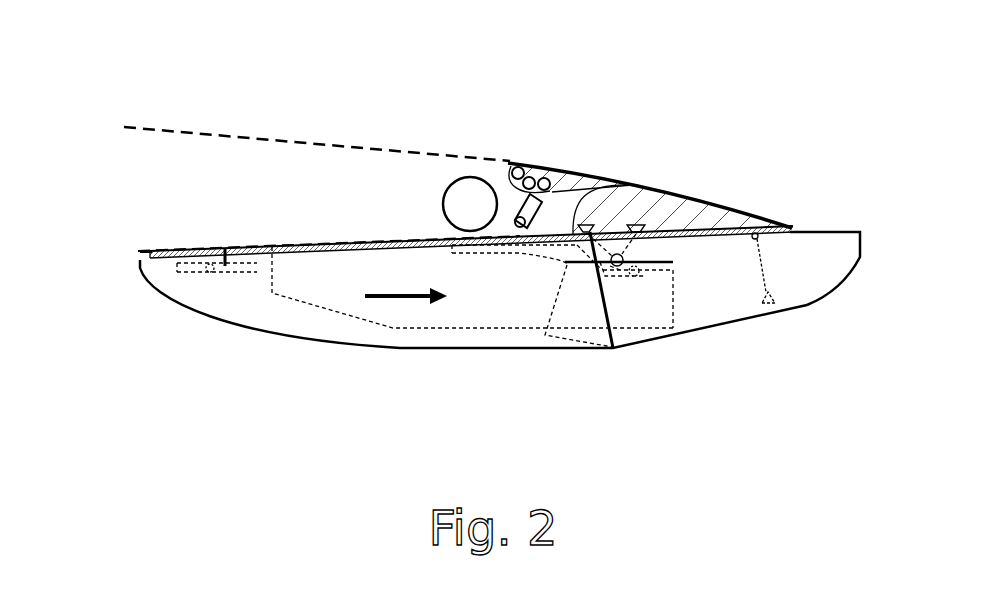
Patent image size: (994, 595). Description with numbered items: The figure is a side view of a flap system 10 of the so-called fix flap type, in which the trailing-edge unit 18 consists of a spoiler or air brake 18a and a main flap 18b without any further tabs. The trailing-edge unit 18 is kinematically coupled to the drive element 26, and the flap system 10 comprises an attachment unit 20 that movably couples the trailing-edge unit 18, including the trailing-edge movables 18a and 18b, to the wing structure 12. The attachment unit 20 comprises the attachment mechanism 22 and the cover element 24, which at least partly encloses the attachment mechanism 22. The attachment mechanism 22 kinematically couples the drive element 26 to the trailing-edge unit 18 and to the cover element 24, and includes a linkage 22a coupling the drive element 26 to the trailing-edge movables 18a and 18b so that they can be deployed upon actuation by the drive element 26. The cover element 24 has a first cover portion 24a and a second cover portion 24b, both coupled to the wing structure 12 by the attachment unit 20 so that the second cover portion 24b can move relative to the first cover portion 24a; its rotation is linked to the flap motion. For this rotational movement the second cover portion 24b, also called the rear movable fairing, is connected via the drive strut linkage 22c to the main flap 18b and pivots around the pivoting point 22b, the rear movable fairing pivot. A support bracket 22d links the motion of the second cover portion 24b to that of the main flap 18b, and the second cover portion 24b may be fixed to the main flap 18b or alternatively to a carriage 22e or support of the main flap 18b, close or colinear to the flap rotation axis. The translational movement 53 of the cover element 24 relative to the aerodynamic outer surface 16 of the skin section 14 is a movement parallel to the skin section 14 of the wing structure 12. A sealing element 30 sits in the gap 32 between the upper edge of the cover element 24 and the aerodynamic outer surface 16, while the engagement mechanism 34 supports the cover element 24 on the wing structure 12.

The flap system 10 is at (300, 122).
The wing structure 12 is at (363, 173).
The skin section 14 is at (213, 247).
The aerodynamic outer surface 16 is at (222, 262).
The trailing-edge unit 18 is at (670, 168).
The spoiler or air brake 18a is at (567, 188).
The main flap 18b is at (685, 215).
The attachment unit 20 is at (589, 338).
The attachment mechanism 22 is at (589, 327).
The linkage 22a is at (473, 253).
The pivoting point 22b is at (585, 255).
The drive strut linkage 22c is at (767, 277).
The support bracket 22d is at (620, 272).
The carriage 22e is at (667, 293).
The cover element 24 is at (521, 302).
The first cover portion 24a is at (517, 337).
The second cover portion 24b is at (808, 245).
The drive element 26 is at (465, 190).
The sealing element 30 is at (270, 247).
The gap 32 is at (136, 259).
The engagement mechanism 34 is at (195, 283).
The translational movement 53 is at (402, 302).